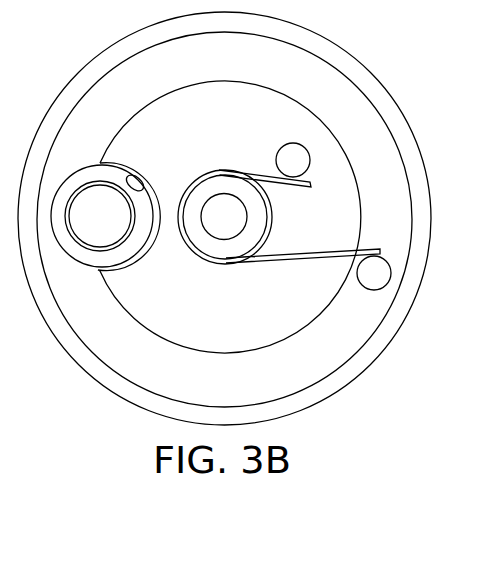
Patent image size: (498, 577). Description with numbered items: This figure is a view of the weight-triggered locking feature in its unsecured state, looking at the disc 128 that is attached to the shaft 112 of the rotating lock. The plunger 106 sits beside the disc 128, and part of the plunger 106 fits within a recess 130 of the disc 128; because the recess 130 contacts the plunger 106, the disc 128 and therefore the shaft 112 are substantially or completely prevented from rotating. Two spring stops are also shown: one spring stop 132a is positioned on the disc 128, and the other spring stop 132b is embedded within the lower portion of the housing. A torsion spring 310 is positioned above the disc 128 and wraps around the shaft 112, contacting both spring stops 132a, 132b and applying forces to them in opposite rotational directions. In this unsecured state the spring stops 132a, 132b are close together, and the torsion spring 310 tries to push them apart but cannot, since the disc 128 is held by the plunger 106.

The plunger 106 is at (83, 267).
The shaft 112 is at (221, 250).
The disc 128 is at (273, 347).
The recess 130 is at (144, 185).
The spring stop 132a is at (276, 154).
The spring stop 132b is at (371, 290).
The torsion spring 310 is at (306, 249).